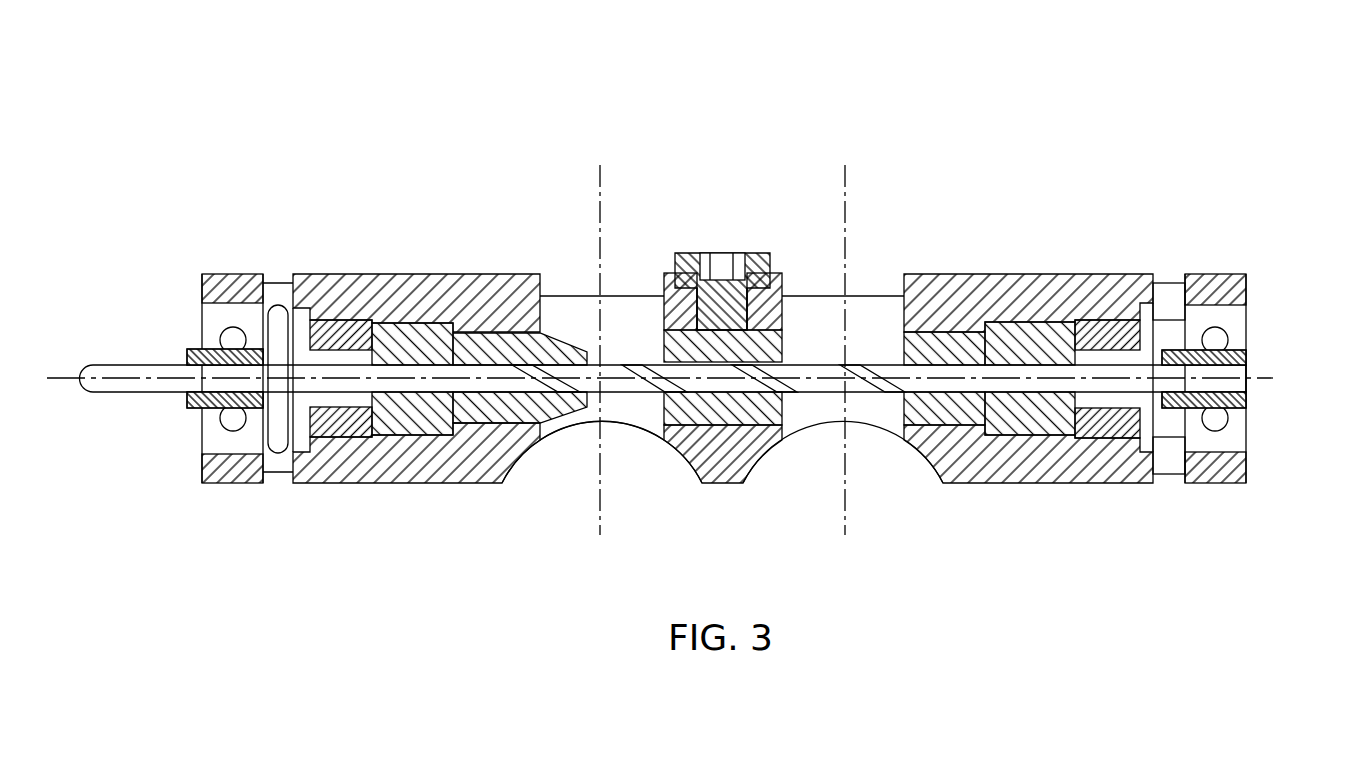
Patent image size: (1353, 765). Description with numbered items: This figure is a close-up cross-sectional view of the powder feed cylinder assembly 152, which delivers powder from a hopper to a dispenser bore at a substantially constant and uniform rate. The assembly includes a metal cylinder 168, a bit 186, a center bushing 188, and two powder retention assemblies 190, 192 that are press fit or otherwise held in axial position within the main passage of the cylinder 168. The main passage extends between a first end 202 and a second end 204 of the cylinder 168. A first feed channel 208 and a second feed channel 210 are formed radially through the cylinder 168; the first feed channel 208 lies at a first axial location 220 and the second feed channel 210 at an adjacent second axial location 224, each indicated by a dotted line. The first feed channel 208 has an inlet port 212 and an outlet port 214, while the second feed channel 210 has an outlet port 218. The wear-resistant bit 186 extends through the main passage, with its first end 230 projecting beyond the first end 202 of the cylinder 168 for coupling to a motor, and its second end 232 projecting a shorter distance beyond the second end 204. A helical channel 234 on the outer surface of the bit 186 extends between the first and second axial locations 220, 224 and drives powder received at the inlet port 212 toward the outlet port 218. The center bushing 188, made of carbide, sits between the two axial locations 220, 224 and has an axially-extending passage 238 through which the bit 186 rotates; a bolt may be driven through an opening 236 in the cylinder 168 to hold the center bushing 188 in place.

The powder feed cylinder assembly 152 is at (1003, 159).
The cylinder 168 is at (481, 273).
The bit 186 is at (618, 388).
The center bushing 188 is at (750, 420).
The powder retention assembly 190 is at (415, 313).
The powder retention assembly 192 is at (1046, 310).
The first end of the cylinder 202 is at (203, 295).
The second end of the cylinder 204 is at (1255, 293).
The first feed channel 208 is at (569, 297).
The second feed channel 210 is at (813, 300).
The inlet port 212 is at (640, 297).
The outlet port 214 is at (556, 438).
The outlet port 218 is at (870, 296).
The first axial location 220 is at (597, 211).
The second axial location 224 is at (851, 213).
The first end of the bit 230 is at (83, 374).
The second end of the bit 232 is at (1254, 370).
The helical channel 234 is at (658, 388).
The opening 236 is at (765, 327).
The axially-extending passage 238 is at (752, 272).